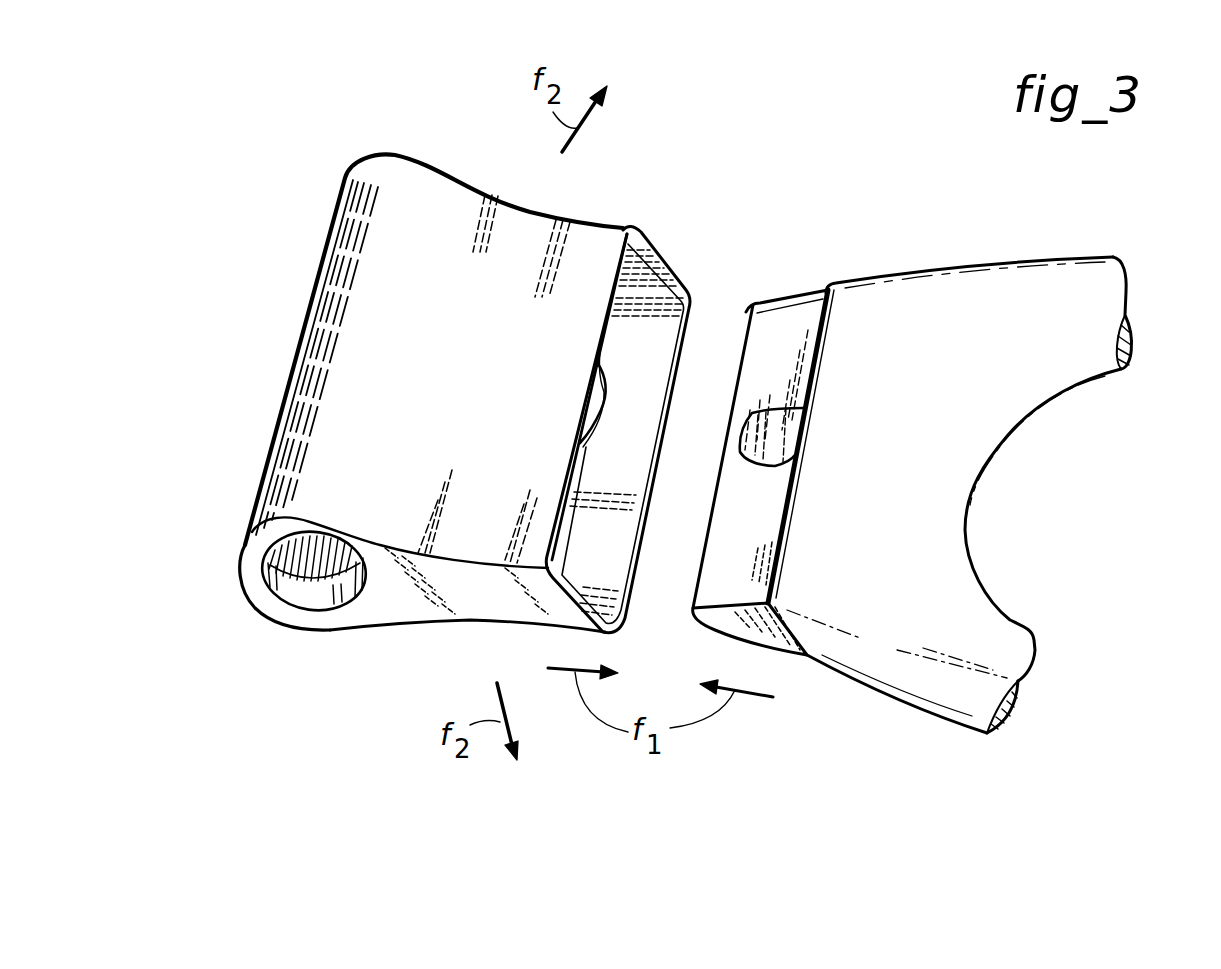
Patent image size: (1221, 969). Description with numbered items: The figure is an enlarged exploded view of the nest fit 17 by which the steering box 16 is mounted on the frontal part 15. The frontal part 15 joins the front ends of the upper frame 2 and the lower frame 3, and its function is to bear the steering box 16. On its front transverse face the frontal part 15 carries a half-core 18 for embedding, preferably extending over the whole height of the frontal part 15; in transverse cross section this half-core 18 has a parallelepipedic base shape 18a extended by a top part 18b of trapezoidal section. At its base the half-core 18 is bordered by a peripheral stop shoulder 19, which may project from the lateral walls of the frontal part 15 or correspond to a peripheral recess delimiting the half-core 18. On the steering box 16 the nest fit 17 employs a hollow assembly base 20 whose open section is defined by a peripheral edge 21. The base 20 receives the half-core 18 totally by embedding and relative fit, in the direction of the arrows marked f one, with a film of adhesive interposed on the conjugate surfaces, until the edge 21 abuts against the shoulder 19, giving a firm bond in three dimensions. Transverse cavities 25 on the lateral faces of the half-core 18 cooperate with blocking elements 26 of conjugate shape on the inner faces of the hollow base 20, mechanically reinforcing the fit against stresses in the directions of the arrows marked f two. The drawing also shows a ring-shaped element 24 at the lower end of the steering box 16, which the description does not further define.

The upper frame 2 is at (1118, 300).
The lower frame 3 is at (1013, 650).
The frontal part 15 is at (953, 460).
The steering box 16 is at (293, 331).
The nest fit 17 is at (743, 247).
The half-core 18 is at (780, 316).
The parallelepipedic base shape 18a is at (760, 573).
The top part of trapezoidal section 18b is at (713, 590).
The stop shoulder 19 is at (793, 507).
The assembly base 20 is at (647, 282).
The peripheral edge 21 is at (605, 328).
The tubular ring 24 is at (303, 590).
The transverse cavities 25 is at (780, 423).
The blocking elements 26 is at (590, 398).